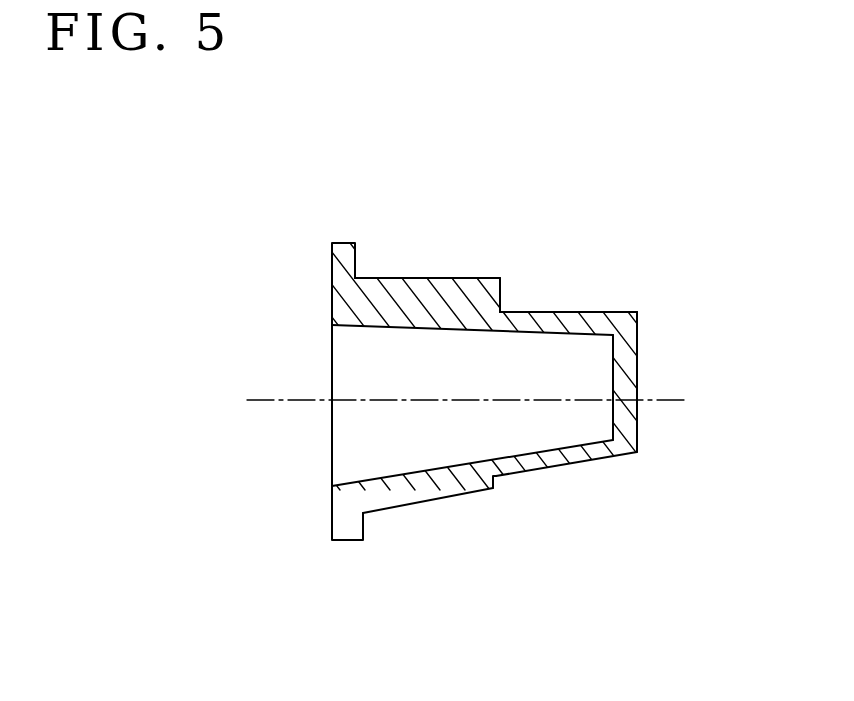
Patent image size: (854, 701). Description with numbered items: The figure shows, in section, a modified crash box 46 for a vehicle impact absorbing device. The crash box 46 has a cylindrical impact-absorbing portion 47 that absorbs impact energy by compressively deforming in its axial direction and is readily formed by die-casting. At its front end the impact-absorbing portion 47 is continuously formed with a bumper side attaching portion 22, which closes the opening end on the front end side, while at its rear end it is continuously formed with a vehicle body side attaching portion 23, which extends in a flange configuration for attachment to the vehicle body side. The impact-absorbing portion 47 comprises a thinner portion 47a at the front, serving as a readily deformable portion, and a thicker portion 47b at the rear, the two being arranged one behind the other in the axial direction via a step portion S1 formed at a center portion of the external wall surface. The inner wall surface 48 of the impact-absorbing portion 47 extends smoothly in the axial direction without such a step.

The crash box 46 is at (657, 262).
The bumper side attaching portion 22 is at (637, 350).
The vehicle body side attaching portion 23 is at (357, 253).
The cylindrical impact-absorbing portion 47 is at (588, 262).
The thinner portion 47a is at (546, 316).
The thicker portion 47b is at (469, 283).
The inner wall surface 48 is at (515, 335).
The step portion S1 is at (495, 483).